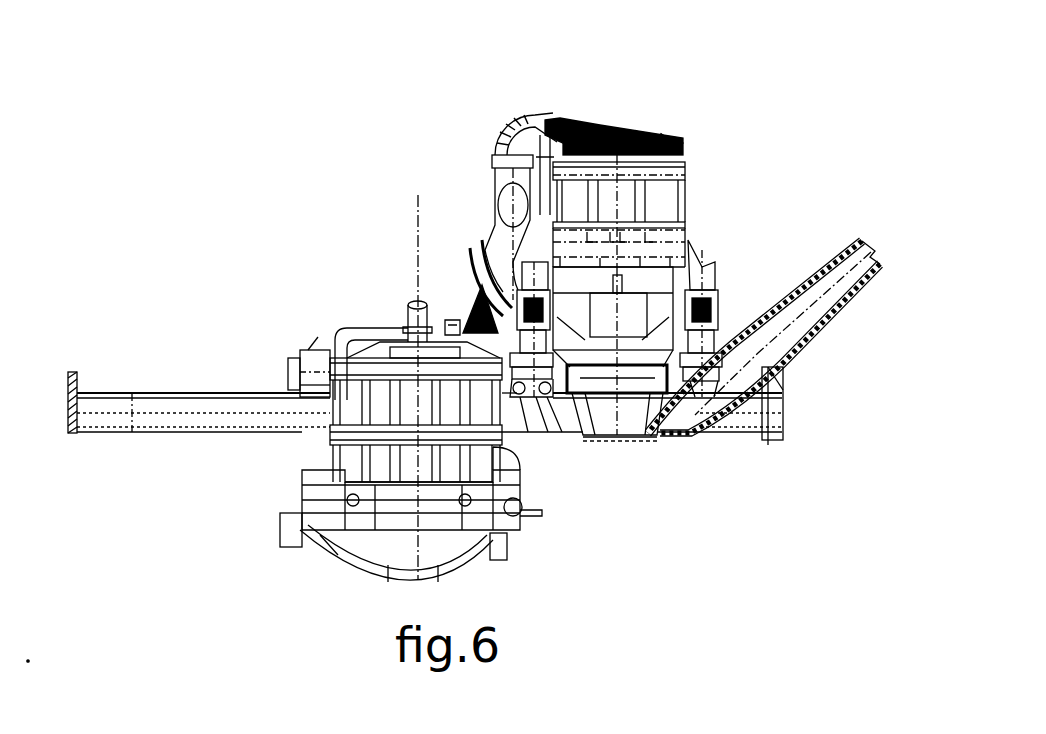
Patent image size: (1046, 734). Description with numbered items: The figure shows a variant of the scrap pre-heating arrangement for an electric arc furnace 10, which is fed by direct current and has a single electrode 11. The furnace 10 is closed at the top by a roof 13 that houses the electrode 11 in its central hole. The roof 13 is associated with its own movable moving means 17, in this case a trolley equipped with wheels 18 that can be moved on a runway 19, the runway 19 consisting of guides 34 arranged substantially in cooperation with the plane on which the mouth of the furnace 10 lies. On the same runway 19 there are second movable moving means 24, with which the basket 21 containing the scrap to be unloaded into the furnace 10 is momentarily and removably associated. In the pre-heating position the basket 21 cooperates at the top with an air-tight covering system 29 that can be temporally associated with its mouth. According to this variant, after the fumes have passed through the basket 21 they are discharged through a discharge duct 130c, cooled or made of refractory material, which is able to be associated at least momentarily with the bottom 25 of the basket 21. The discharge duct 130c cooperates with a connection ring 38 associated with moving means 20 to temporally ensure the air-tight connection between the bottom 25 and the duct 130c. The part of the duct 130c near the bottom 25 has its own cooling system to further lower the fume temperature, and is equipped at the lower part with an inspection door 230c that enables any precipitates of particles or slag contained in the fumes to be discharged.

The electric arc furnace 10 is at (300, 471).
The electrode 11 is at (413, 318).
The roof 13 is at (378, 325).
The movable moving means 17 is at (318, 337).
The wheels 18 is at (555, 420).
The runway 19 is at (183, 393).
The moving means 20 is at (640, 365).
The basket 21 is at (663, 205).
The second movable moving means 24 is at (532, 420).
The bottom 25 is at (715, 262).
The air-tight covering system 29 is at (637, 137).
The guides 34 is at (197, 415).
The connection ring 38 is at (773, 400).
The discharge duct 130c is at (787, 324).
The inspection door 230c is at (640, 440).